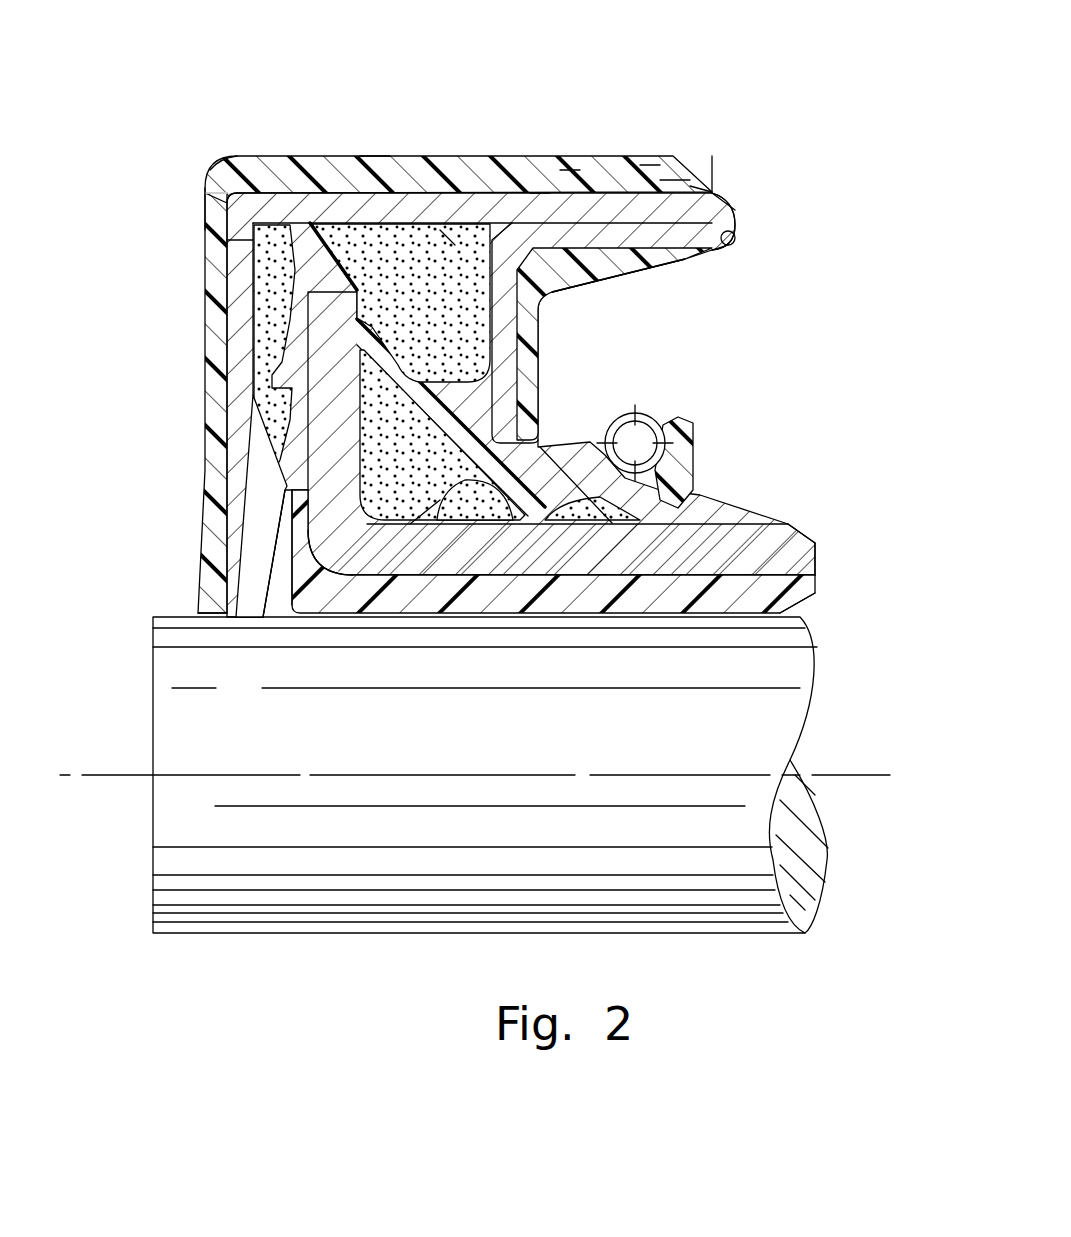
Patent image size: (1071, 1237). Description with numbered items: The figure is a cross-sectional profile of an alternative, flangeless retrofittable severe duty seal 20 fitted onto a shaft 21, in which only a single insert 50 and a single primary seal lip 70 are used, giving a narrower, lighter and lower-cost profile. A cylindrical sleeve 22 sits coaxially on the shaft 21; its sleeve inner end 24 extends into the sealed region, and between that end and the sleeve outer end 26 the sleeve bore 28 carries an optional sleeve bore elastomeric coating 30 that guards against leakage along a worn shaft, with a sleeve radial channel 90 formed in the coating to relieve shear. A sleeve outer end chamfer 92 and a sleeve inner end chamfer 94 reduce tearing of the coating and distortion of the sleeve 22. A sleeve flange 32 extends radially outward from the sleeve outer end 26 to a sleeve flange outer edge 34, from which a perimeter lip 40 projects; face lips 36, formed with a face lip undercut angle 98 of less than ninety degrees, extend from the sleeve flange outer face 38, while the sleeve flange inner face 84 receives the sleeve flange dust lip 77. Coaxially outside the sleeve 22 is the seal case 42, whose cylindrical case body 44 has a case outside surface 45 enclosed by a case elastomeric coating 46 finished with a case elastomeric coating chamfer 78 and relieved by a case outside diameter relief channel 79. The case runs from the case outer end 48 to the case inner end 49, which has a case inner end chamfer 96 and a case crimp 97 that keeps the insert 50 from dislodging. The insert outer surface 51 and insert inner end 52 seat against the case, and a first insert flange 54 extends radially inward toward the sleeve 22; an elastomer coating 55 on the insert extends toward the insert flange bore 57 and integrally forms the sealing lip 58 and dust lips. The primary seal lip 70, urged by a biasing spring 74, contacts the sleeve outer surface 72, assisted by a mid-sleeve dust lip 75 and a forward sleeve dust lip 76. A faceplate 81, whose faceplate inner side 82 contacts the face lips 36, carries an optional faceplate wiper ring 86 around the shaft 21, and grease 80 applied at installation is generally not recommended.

The severe duty seal 20 is at (205, 115).
The shaft 21 is at (450, 918).
The cylindrical sleeve 22 is at (826, 545).
The sleeve inner end 24 is at (825, 565).
The sleeve outer end 26 is at (330, 480).
The sleeve bore 28 is at (397, 560).
The sleeve bore elastomeric coating 30 is at (800, 613).
The sleeve flange 32 is at (325, 422).
The sleeve flange outer edge 34 is at (452, 215).
The face lips 36 is at (282, 385).
The sleeve flange outer face 38 is at (272, 352).
The perimeter lip 40 is at (292, 235).
The seal case 42 is at (748, 188).
The case body 44 is at (620, 168).
The case outside surface 45 is at (572, 180).
The case elastomeric coating 46 is at (660, 168).
The case outer end 48 is at (245, 160).
The case inner end 49 is at (738, 192).
The insert 50 is at (740, 340).
The insert outer surface 51 is at (658, 166).
The insert inner end 52 is at (728, 228).
The first insert flange 54 is at (508, 312).
The elastomer coating 55 is at (598, 272).
The insert flange bore 57 is at (540, 428).
The sealing lip 58 is at (245, 240).
The primary seal lip 70 is at (700, 490).
The sleeve outer surface 72 is at (770, 522).
The biasing spring 74 is at (625, 415).
The mid-sleeve dust lip 75 is at (500, 510).
The forward sleeve dust lip 76 is at (425, 500).
The sleeve flange dust lip 77 is at (540, 190).
The case elastomeric coating chamfer 78 is at (705, 180).
The case outside diameter relief channel 79 is at (368, 155).
The grease 80 is at (390, 455).
The faceplate 81 is at (178, 200).
The faceplate inner side 82 is at (260, 293).
The sleeve flange inner face 84 is at (500, 200).
The faceplate wiper ring 86 is at (210, 593).
The sleeve radial channel 90 is at (568, 612).
The sleeve outer end chamfer 92 is at (305, 530).
The sleeve inner end chamfer 94 is at (790, 600).
The case inner end chamfer 96 is at (728, 252).
The case crimp 97 is at (738, 238).
The face lip undercut angle 98 is at (278, 500).